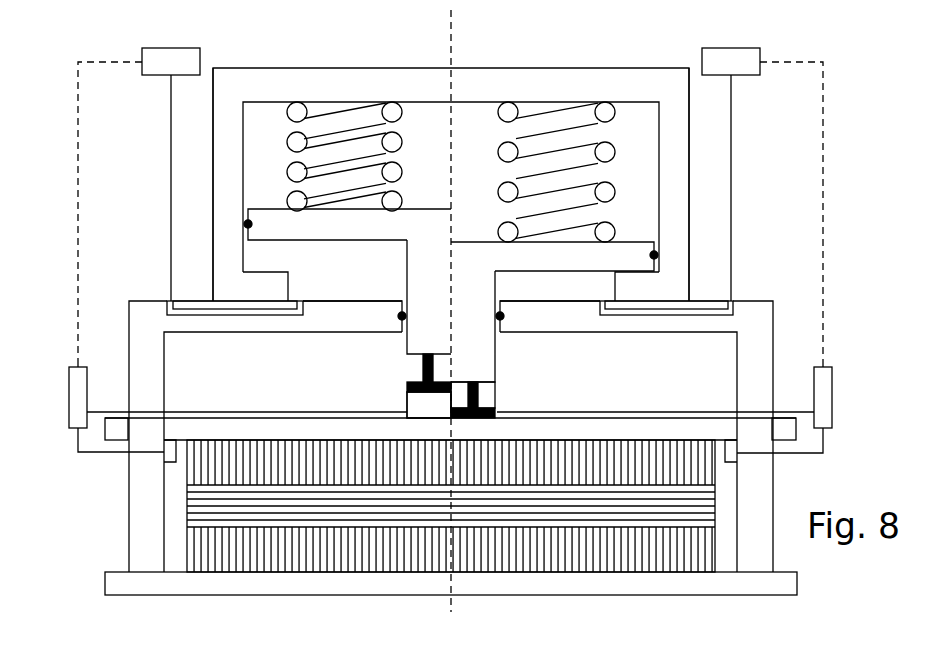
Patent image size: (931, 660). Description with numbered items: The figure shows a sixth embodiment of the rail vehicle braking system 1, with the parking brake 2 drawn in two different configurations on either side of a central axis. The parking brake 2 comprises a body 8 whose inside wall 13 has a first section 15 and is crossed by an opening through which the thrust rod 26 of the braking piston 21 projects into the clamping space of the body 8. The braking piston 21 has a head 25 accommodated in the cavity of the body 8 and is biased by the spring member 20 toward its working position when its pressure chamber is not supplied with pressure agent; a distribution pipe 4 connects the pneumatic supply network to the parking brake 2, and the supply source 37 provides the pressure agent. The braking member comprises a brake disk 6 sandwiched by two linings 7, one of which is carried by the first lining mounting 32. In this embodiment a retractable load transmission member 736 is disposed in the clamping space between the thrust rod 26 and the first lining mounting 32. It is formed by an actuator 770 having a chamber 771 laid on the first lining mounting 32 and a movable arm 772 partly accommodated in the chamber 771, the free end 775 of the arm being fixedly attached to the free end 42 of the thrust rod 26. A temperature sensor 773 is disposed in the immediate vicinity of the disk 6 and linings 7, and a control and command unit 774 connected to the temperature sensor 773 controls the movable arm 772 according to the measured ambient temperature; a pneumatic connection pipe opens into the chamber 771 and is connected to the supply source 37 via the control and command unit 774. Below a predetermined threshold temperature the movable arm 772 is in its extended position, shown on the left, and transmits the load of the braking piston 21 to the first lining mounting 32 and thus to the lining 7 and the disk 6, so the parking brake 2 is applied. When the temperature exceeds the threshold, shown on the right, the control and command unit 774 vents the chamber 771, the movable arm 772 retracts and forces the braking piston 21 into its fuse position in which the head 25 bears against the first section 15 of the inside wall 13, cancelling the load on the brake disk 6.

The rail vehicle braking system 1 is at (100, 157).
The parking brake 2 is at (132, 276).
The distribution pipe 4 is at (171, 125).
The brake disk 6 is at (195, 505).
The linings 7 is at (195, 477).
The body 8 is at (277, 83).
The inside wall 13 is at (640, 296).
The first section 15 is at (645, 286).
The spring member 20 is at (345, 127).
The braking piston 21 is at (431, 212).
The head 25 is at (358, 235).
The thrust rod 26 is at (444, 316).
The first lining mounting 32 is at (210, 427).
The supply source 37 is at (142, 55).
The free end 42 is at (519, 385).
The retractable load transmission member 736 is at (360, 376).
The actuator 770 is at (407, 407).
The chamber 771 is at (428, 408).
The movable arm 772 is at (423, 368).
The temperature sensor 773 is at (170, 462).
The control and command unit 774 is at (69, 394).
The free end 775 is at (479, 391).